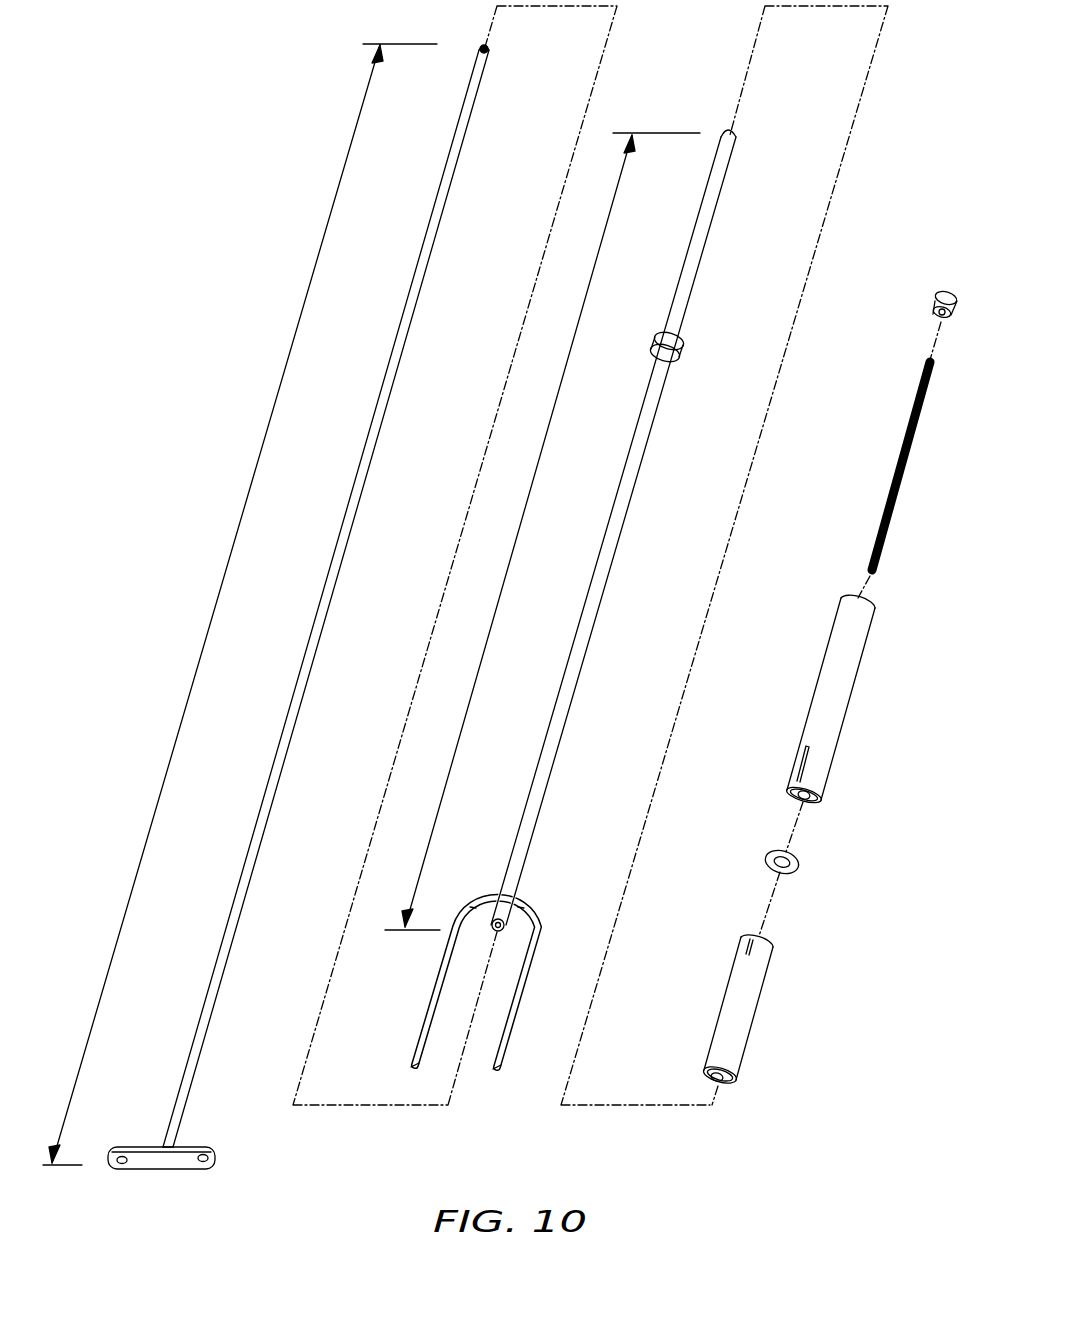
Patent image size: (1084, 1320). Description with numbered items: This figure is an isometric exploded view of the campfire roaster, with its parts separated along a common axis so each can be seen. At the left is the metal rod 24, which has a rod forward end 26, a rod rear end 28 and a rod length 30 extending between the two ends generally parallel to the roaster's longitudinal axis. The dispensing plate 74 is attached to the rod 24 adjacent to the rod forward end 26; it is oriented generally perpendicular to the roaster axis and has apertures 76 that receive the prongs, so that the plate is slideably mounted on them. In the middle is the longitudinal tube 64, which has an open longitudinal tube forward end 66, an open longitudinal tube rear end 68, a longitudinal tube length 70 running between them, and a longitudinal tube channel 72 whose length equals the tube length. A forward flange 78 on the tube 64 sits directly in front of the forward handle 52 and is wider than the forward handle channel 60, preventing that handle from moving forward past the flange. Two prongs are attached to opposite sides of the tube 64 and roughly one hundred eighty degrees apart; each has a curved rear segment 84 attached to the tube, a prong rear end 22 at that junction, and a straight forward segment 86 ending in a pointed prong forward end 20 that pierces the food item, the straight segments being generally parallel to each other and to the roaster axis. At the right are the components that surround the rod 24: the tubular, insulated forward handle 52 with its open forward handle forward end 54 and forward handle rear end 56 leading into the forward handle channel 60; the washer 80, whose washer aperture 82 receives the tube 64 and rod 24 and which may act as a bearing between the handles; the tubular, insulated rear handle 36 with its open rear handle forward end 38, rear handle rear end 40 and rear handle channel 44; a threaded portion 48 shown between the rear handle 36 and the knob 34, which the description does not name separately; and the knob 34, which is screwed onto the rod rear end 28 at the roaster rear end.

The prong forward end 20 is at (414, 1066).
The prong rear end 22 is at (490, 900).
The rod 24 is at (272, 808).
The rod forward end 26 is at (172, 1144).
The rod rear end 28 is at (490, 50).
The rod length 30 is at (237, 522).
The knob 34 is at (940, 292).
The rear handle 36 is at (868, 655).
The rear handle forward end 38 is at (818, 805).
The rear handle rear end 40 is at (872, 613).
The rear handle channel 44 is at (800, 797).
The threaded rod 48 is at (900, 448).
The forward handle 52 is at (778, 1011).
The forward handle forward end 54 is at (735, 1082).
The forward handle rear end 56 is at (775, 950).
The forward handle channel 60 is at (712, 1075).
The longitudinal tube 64 is at (627, 522).
The longitudinal tube forward end 66 is at (505, 928).
The longitudinal tube rear end 68 is at (735, 135).
The longitudinal tube length 70 is at (519, 537).
The longitudinal tube channel 72 is at (462, 935).
The dispensing plate 74 is at (170, 1166).
The aperture 76 is at (118, 1168).
The forward flange 78 is at (683, 355).
The washer 80 is at (798, 866).
The washer aperture 82 is at (778, 868).
The curved rear segment 84 is at (540, 910).
The straight forward segment 86 is at (523, 995).